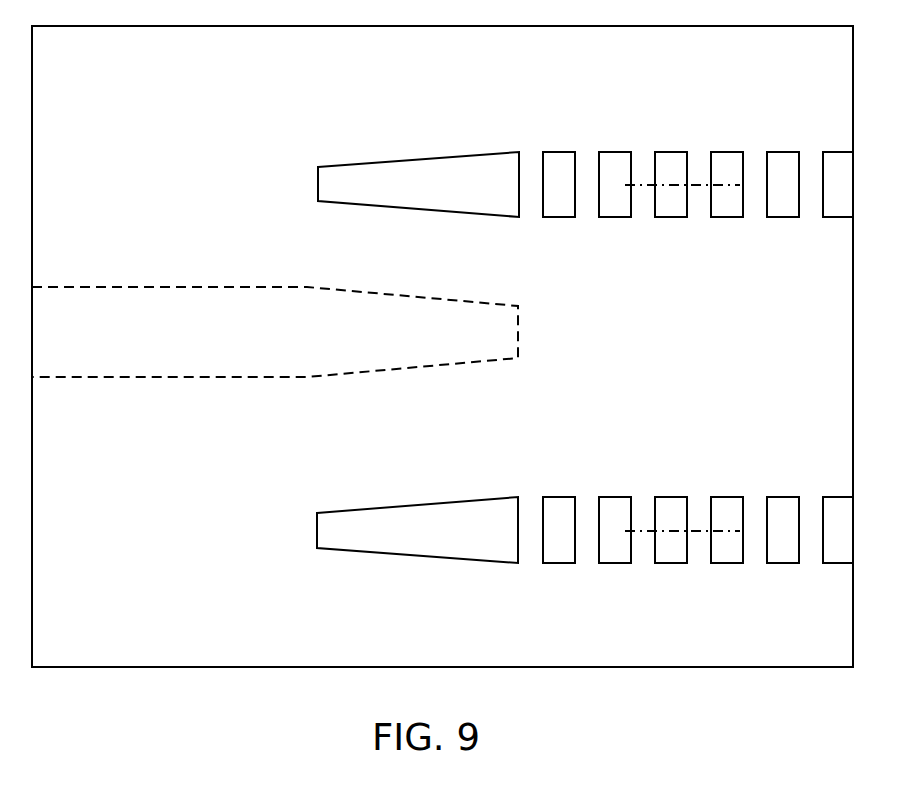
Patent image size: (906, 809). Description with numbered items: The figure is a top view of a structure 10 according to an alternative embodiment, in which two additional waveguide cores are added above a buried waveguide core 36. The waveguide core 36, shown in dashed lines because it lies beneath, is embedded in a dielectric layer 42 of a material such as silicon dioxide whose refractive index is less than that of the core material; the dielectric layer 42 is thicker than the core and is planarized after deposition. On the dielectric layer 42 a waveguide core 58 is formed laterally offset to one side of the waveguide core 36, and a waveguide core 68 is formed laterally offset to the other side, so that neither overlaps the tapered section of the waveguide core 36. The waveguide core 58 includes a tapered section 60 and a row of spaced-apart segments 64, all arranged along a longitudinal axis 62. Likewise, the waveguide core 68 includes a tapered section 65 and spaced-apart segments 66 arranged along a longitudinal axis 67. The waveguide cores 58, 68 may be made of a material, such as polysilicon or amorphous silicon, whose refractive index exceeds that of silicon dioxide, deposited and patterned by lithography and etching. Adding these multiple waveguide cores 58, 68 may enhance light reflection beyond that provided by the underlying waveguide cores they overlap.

The thermal management device 10 is at (146, 111).
The waveguide core 36 is at (156, 413).
The dielectric layer 42 is at (102, 632).
The waveguide core 58 is at (698, 188).
The tapered section 60 is at (453, 183).
The longitudinal axis 62 is at (663, 187).
The spaced-apart segments 64 is at (560, 203).
The tapered section 65 is at (450, 530).
The spaced-apart segments 66 is at (558, 550).
The longitudinal axis 67 is at (662, 535).
The waveguide core 68 is at (698, 536).